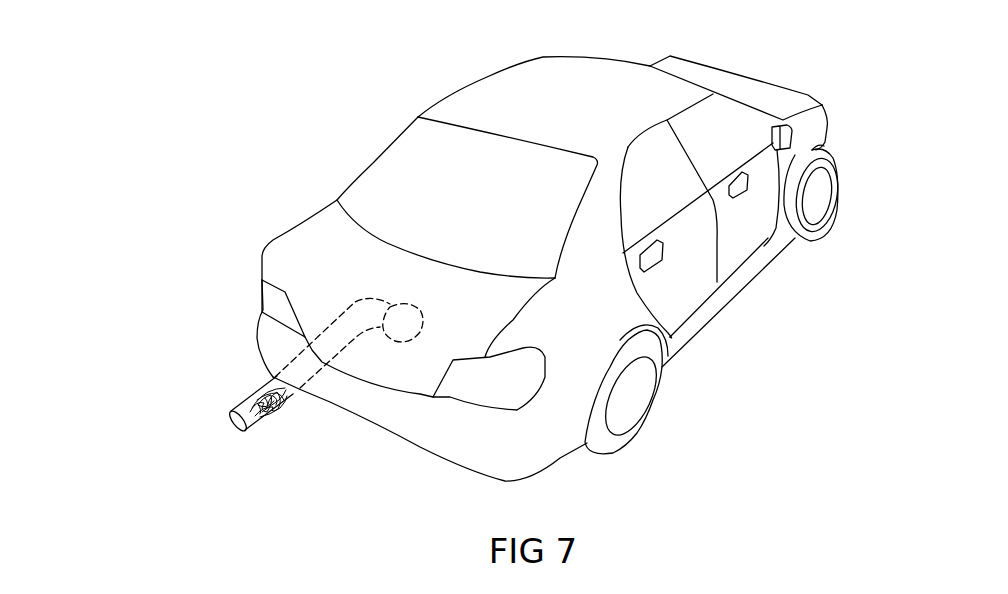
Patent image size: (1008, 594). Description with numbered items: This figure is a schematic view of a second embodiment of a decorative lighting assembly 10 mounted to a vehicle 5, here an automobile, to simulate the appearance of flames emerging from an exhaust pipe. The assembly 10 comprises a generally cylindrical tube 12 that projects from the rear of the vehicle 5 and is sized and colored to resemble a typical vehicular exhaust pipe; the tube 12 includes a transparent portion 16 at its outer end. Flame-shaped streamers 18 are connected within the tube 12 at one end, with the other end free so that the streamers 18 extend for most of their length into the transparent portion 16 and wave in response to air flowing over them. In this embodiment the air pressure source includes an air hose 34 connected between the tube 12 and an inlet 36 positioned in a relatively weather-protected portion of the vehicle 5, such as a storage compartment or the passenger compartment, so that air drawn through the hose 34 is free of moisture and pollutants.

The vehicle 5 is at (505, 79).
The decorative lighting assembly 10 is at (158, 432).
The tube 12 is at (303, 412).
The transparent portion 16 is at (255, 425).
The streamers 18 is at (257, 400).
The air hose 34 is at (353, 322).
The inlet 36 is at (407, 333).